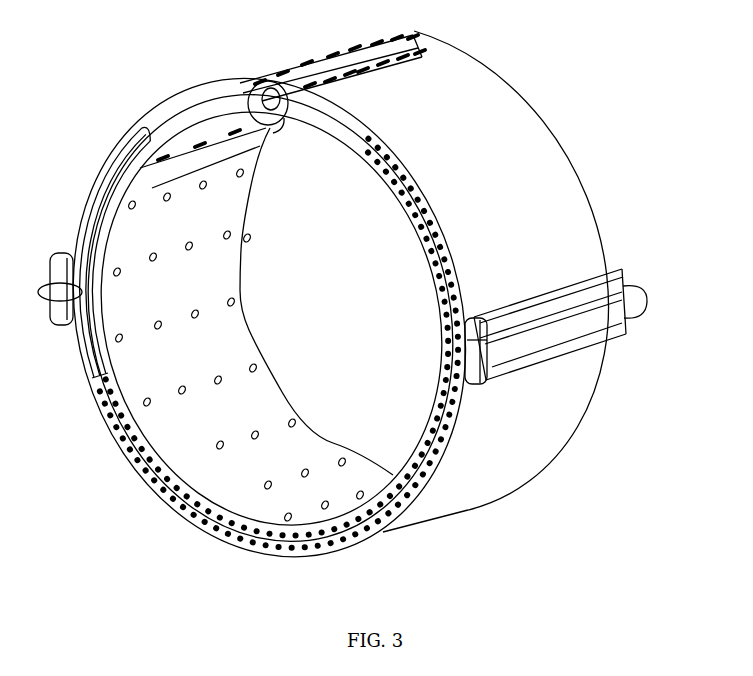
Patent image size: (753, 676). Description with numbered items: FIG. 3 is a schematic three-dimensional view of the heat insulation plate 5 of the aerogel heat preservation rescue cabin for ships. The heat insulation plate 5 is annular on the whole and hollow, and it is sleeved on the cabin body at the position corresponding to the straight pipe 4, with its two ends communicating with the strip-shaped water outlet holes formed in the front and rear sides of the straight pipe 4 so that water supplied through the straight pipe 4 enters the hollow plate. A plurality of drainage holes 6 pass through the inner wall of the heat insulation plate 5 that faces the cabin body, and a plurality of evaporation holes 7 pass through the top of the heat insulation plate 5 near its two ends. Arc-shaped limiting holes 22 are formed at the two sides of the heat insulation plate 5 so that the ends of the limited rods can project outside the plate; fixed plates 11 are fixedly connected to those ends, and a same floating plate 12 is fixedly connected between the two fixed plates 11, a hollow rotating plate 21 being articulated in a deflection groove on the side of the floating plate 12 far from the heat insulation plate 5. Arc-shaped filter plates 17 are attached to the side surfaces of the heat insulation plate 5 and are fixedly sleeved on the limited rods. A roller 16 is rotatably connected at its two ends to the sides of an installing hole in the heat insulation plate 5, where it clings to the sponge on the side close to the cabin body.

The straight pipe 4 is at (315, 73).
The heat insulation plate 5 is at (192, 105).
The drainage hole 6 is at (238, 305).
The evaporation hole 7 is at (364, 70).
The fixed plate 11 is at (430, 345).
The floating plate 12 is at (627, 276).
The roller 16 is at (253, 145).
The filter plate 17 is at (435, 235).
The rotating plate 21 is at (512, 367).
The limiting hole 22 is at (100, 192).